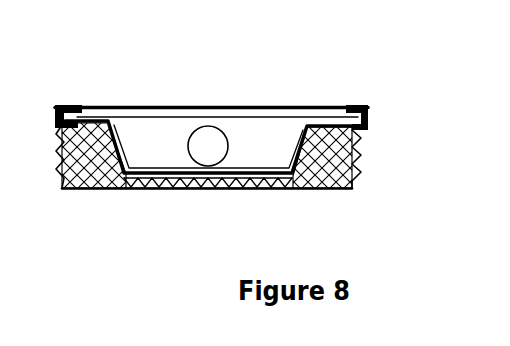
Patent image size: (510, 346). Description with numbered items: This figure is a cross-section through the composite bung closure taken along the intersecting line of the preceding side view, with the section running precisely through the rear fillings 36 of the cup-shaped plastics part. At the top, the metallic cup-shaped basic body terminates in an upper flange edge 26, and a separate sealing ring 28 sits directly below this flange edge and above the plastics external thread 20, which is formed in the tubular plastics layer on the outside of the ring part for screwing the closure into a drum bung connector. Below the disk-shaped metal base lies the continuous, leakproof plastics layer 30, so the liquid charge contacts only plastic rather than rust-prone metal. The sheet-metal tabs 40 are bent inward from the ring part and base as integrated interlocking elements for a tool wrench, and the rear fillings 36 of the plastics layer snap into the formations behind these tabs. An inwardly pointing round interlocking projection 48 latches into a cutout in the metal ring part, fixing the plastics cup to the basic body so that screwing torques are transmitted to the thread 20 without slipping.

The external thread 20 is at (363, 156).
The upper flange edge 26 is at (62, 108).
The sealing ring 28 is at (63, 120).
The plastics layer 30 is at (210, 188).
The rear filling 36 is at (100, 188).
The sheet-metal tab 40 is at (137, 133).
The interlocking projection 48 is at (207, 148).